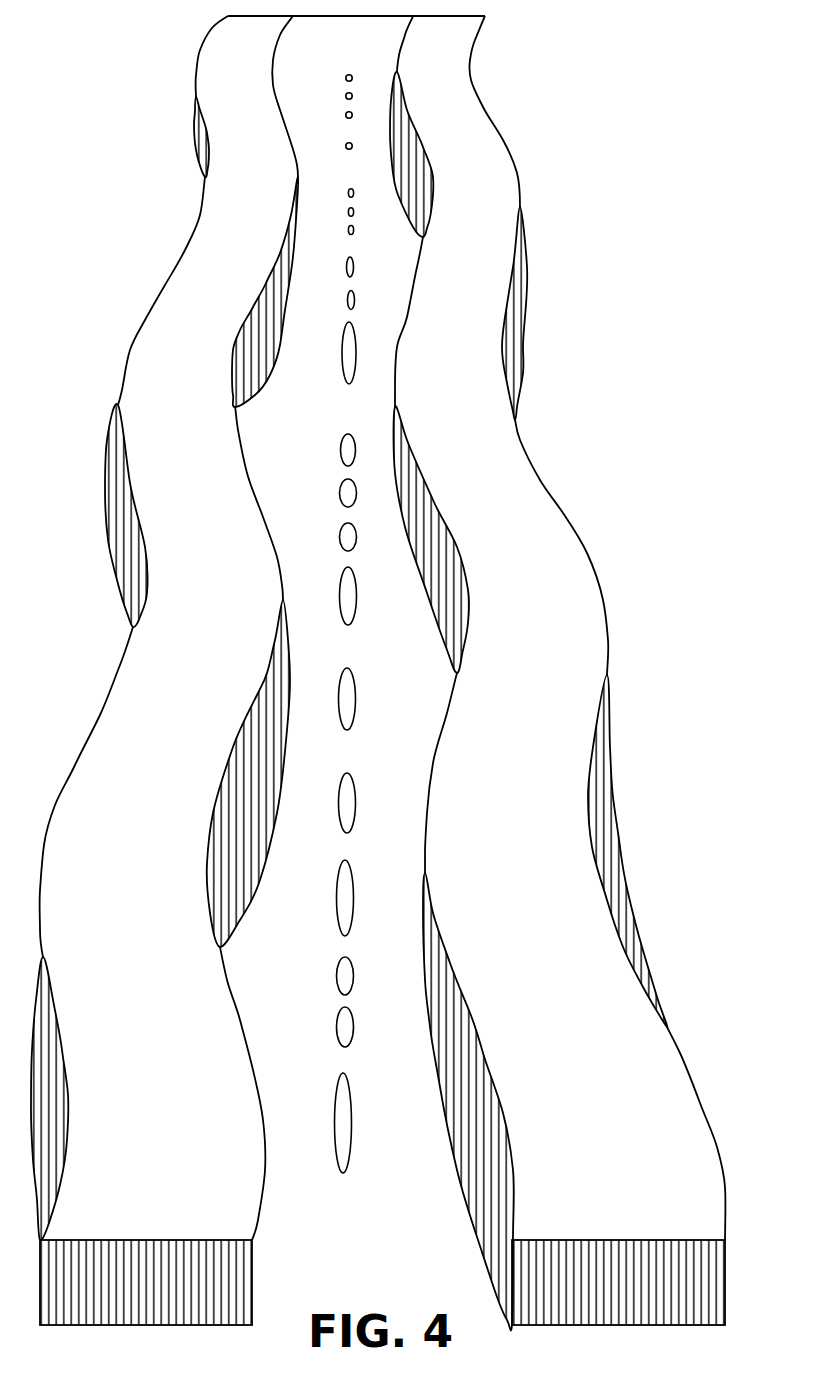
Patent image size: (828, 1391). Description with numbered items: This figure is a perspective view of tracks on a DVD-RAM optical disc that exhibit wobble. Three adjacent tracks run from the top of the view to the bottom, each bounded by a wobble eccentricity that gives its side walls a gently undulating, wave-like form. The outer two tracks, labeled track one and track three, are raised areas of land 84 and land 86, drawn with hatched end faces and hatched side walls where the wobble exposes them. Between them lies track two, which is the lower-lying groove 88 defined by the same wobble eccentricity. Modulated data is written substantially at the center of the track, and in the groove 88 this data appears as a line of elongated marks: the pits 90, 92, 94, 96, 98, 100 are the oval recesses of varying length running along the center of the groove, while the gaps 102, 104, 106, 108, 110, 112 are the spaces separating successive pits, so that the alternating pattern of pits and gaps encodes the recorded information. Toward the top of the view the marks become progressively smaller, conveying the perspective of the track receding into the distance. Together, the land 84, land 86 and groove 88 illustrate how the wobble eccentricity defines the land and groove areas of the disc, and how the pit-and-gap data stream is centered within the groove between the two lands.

The land 84 is at (157, 1171).
The land 86 is at (632, 1175).
The groove 88 is at (360, 1237).
The pit 90 is at (337, 1081).
The pit 92 is at (337, 1013).
The pit 94 is at (348, 960).
The pit 96 is at (348, 865).
The pit 98 is at (350, 777).
The pit 100 is at (353, 678).
The gap 102 is at (355, 645).
The gap 104 is at (343, 467).
The gap 106 is at (343, 412).
The gap 108 is at (347, 313).
The gap 110 is at (353, 247).
The gap 112 is at (352, 749).